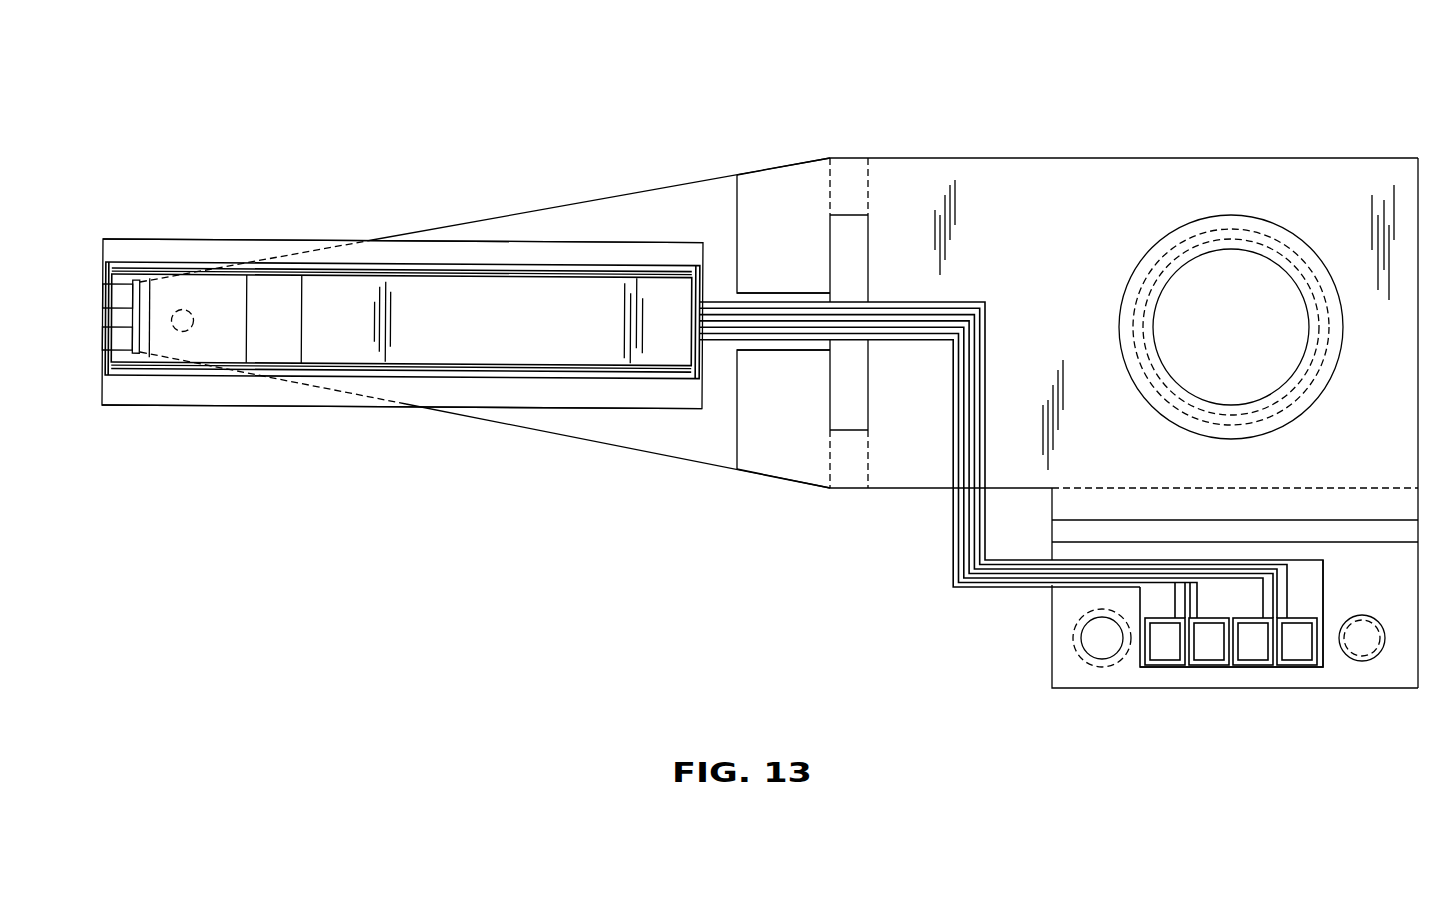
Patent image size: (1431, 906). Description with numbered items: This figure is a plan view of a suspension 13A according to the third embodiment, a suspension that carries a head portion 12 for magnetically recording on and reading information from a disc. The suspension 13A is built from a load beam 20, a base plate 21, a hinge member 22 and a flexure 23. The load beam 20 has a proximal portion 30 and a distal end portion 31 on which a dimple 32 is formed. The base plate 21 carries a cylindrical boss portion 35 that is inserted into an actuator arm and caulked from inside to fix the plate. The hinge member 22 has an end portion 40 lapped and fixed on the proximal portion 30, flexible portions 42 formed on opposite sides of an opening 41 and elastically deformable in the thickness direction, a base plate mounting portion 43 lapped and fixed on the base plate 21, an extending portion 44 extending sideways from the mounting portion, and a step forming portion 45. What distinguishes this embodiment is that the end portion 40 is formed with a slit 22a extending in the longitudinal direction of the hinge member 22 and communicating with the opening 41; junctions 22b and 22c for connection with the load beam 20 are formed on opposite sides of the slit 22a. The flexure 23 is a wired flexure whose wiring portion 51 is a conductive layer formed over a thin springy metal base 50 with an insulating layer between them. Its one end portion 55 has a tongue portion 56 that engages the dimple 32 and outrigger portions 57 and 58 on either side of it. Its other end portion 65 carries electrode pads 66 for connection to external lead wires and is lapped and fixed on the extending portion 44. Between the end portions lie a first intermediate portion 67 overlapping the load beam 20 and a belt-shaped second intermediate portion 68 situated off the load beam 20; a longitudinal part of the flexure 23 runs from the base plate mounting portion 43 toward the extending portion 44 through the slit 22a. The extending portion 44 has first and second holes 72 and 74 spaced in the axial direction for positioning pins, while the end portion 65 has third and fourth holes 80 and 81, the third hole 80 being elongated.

The suspension 13A is at (607, 122).
The head portion 12 is at (172, 412).
The load beam 20 is at (550, 215).
The base plate 21 is at (1191, 158).
The hinge member 22 is at (931, 155).
The slit 22a is at (768, 295).
The junction 22b is at (732, 190).
The junction 22c is at (745, 430).
The flexure 23 is at (663, 412).
The proximal portion 30 is at (775, 180).
The distal end portion 31 is at (160, 290).
The dimple 32 is at (196, 318).
The boss portion 35 is at (1156, 320).
The end portion 40 is at (776, 470).
The opening 41 is at (840, 234).
The flexible portion 42 is at (848, 160).
The base plate mounting portion 43 is at (1284, 168).
The extending portion 44 is at (1050, 652).
The step forming portion 45 is at (1050, 531).
The metal base 50 is at (565, 396).
The wiring portion 51 is at (458, 266).
The one end portion 55 is at (104, 300).
The tongue portion 56 is at (250, 330).
The outrigger portion 57 is at (228, 240).
The outrigger portion 58 is at (225, 396).
The other end portion 65 is at (1281, 680).
The electrode pad 66 is at (1243, 653).
The first intermediate portion 67 is at (497, 406).
The second intermediate portion 68 is at (953, 550).
The first hole 72 is at (1368, 655).
The second hole 74 is at (1122, 664).
The third hole 80 is at (1352, 655).
The fourth hole 81 is at (1100, 652).